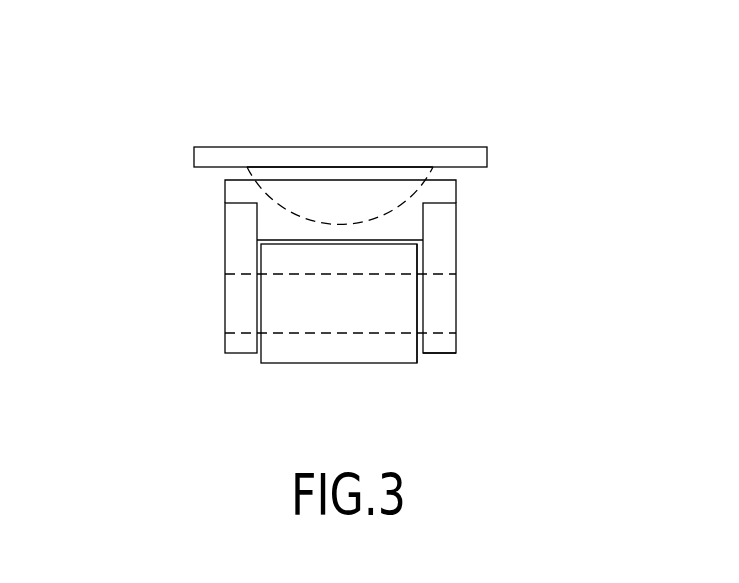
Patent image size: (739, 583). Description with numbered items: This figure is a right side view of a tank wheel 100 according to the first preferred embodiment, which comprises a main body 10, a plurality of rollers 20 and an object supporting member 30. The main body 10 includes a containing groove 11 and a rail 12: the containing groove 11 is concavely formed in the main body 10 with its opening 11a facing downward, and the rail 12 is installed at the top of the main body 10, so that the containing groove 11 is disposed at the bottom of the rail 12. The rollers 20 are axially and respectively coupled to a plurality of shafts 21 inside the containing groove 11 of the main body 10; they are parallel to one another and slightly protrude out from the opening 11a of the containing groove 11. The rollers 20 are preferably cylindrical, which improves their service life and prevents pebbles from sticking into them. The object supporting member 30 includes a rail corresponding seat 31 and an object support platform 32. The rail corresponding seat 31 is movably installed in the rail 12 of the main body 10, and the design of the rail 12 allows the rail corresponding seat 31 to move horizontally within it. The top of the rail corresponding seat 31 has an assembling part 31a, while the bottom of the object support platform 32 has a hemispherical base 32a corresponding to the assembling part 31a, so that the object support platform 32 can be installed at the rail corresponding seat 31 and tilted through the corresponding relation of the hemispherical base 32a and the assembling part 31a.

The tank wheel 100 is at (73, 36).
The main body 10 is at (225, 242).
The containing groove 11 is at (423, 340).
The opening 11a is at (423, 353).
The rail 12 is at (240, 203).
The rollers 20 is at (342, 364).
The shafts 21 is at (421, 304).
The object supporting member 30 is at (557, 122).
The rail corresponding seat 31 is at (450, 189).
The assembling part 31a is at (363, 218).
The object support platform 32 is at (487, 157).
The hemispherical base 32a is at (248, 171).